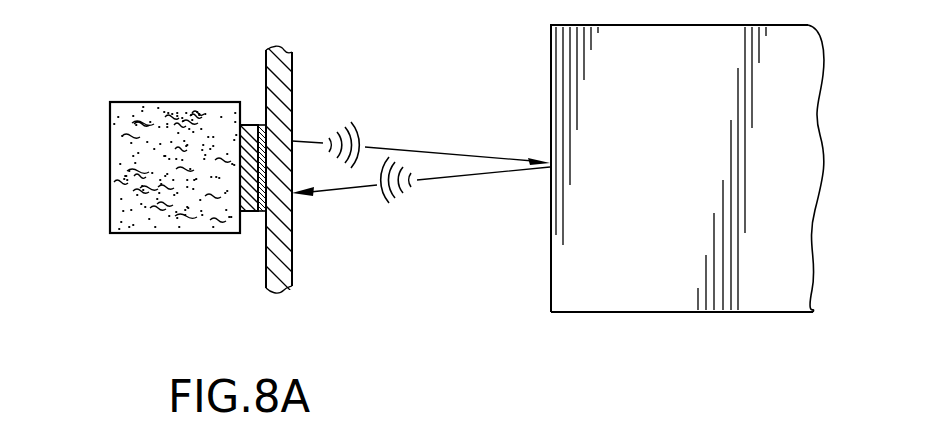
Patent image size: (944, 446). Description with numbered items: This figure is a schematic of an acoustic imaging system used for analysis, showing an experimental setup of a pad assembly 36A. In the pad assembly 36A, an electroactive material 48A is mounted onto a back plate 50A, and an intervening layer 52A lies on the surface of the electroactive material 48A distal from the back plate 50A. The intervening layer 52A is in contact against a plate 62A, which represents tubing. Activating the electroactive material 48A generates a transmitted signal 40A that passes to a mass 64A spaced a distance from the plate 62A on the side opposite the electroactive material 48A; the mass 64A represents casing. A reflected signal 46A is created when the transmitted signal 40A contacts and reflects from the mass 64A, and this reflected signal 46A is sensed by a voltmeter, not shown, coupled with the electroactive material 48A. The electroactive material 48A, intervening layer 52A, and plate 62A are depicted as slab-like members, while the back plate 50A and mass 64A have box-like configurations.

The pad assembly 36A is at (115, 76).
The transmitted signal 40A is at (362, 128).
The reflected signal 46A is at (383, 197).
The electroactive material 48A is at (248, 205).
The back plate 50A is at (132, 217).
The intervening layer 52A is at (263, 127).
The plate 62A is at (292, 282).
The mass 64A is at (750, 293).